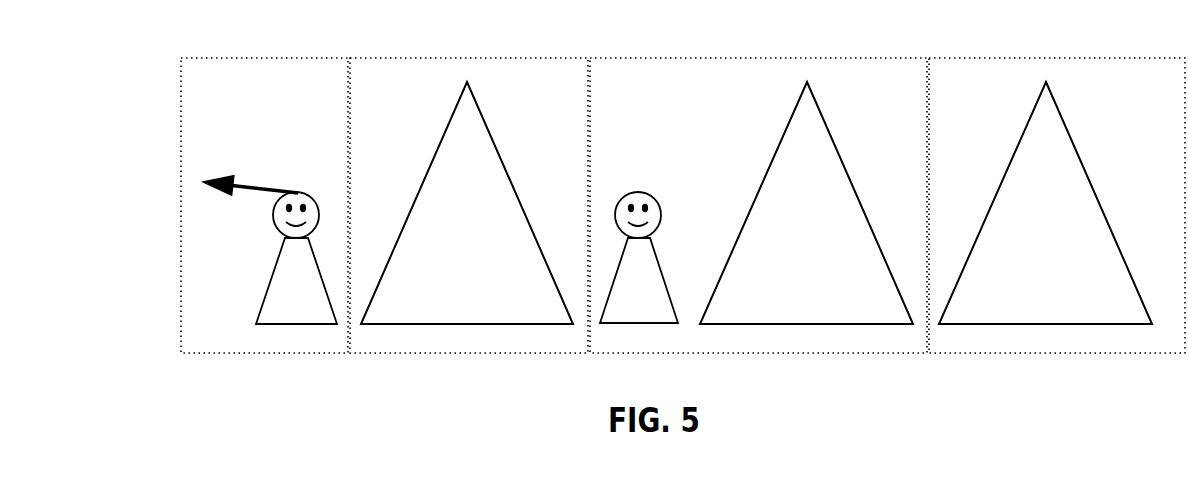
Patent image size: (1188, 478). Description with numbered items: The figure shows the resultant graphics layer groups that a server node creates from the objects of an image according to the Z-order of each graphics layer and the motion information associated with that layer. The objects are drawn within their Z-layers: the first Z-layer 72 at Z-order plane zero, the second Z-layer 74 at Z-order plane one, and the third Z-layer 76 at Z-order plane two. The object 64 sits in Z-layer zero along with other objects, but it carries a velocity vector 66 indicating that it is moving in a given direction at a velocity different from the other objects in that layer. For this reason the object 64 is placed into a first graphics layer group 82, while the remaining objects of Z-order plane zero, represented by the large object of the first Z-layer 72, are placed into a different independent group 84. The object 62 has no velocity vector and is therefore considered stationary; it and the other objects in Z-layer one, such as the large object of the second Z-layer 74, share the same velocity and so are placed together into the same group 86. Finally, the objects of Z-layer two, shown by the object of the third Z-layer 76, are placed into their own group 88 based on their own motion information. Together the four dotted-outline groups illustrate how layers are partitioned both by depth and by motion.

The object 62 is at (647, 193).
The object 64 is at (271, 277).
The velocity vector 66 is at (205, 178).
The Z-layer Z=0 72 is at (475, 148).
The Z-layer Z=1 74 is at (831, 158).
The Z-layer Z=2 76 is at (1053, 120).
The first graphics layer group 82 is at (232, 57).
The independent group 84 is at (466, 58).
The group 86 is at (752, 58).
The grid cell G2 88 is at (1003, 58).